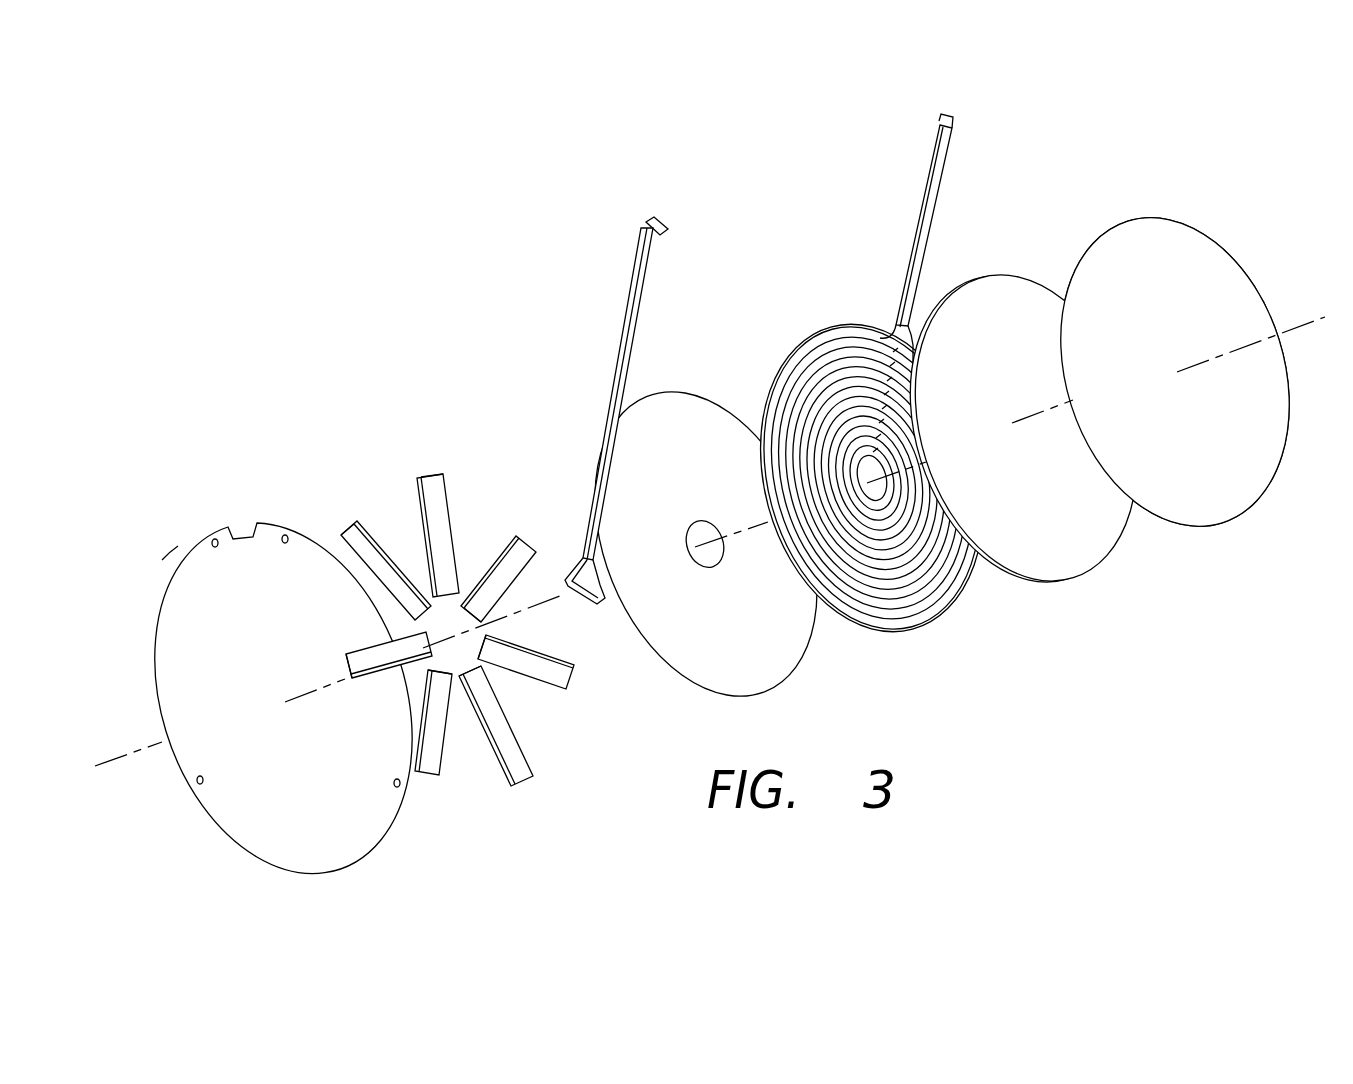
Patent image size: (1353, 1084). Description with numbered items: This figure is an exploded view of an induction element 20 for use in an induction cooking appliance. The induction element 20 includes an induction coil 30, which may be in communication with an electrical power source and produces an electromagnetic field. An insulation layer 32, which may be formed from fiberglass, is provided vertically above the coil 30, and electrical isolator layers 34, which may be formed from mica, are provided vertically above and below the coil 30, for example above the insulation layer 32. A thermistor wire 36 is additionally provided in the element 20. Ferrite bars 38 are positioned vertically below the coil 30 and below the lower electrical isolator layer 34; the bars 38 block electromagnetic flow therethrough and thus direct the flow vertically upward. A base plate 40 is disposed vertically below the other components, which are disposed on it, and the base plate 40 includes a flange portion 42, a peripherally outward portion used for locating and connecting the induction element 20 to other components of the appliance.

The induction element 20 is at (396, 341).
The induction coil 30 is at (867, 313).
The insulation layer 32 is at (1020, 262).
The electrical isolator layers 34 is at (709, 386).
The thermistor wire 36 is at (630, 288).
The ferrite bars 38 is at (432, 483).
The base plate 40 is at (298, 566).
The flange portion 42 is at (210, 563).